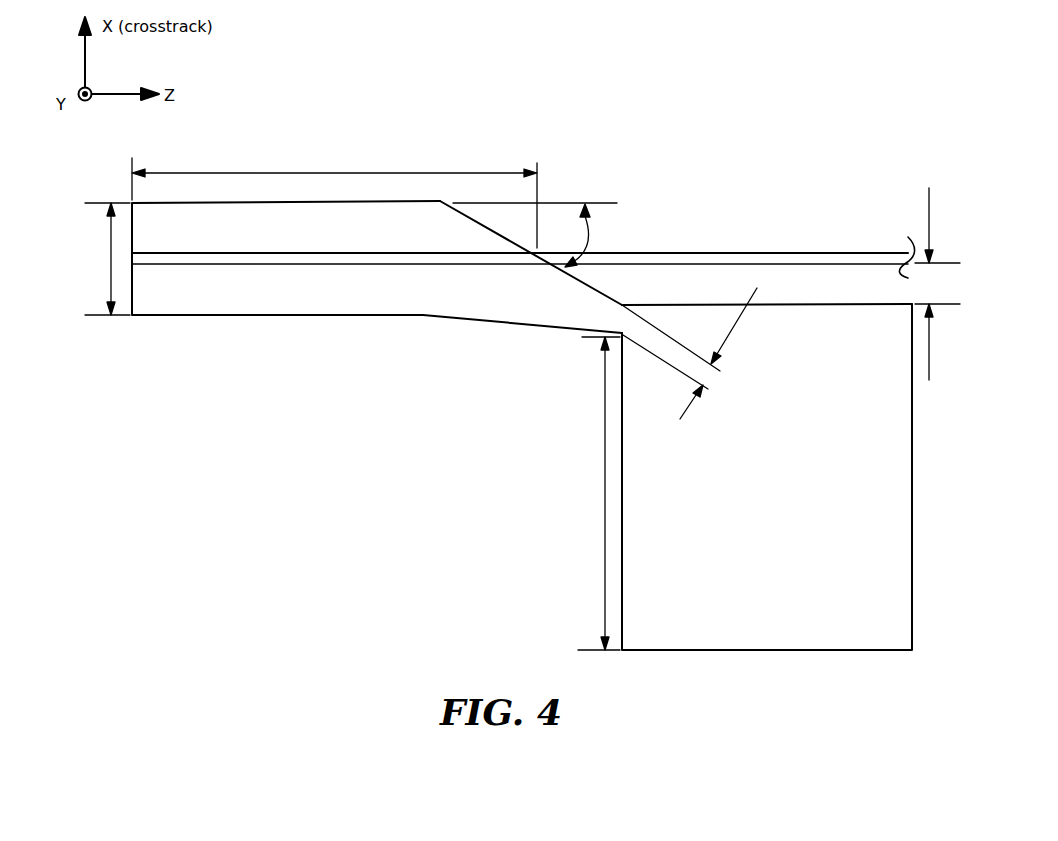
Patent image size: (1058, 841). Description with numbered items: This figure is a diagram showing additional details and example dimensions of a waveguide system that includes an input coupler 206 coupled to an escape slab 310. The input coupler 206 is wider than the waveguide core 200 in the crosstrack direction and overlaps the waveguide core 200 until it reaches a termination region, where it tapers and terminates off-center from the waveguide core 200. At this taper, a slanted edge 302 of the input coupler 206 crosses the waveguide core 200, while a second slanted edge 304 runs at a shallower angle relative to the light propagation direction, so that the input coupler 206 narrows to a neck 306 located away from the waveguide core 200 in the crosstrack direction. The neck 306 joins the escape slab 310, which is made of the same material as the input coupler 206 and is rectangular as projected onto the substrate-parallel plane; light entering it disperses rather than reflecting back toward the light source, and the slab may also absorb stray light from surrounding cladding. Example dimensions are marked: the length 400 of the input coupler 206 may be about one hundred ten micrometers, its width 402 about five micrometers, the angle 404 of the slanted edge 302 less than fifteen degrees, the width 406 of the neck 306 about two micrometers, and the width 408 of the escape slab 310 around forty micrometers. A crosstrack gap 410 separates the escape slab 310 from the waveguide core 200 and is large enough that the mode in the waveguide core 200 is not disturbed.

The waveguide core 200 is at (707, 252).
The input coupler 206 is at (311, 316).
The slanted edge 302 is at (598, 290).
The second slanted edge 304 is at (487, 324).
The neck 306 is at (601, 316).
The escape slab 310 is at (716, 640).
The length 400 is at (425, 173).
The width 402 is at (108, 252).
The angle 404 is at (587, 233).
The width of the neck 406 is at (757, 288).
The width of the escape slab 408 is at (605, 486).
The crosstrack gap 410 is at (929, 211).